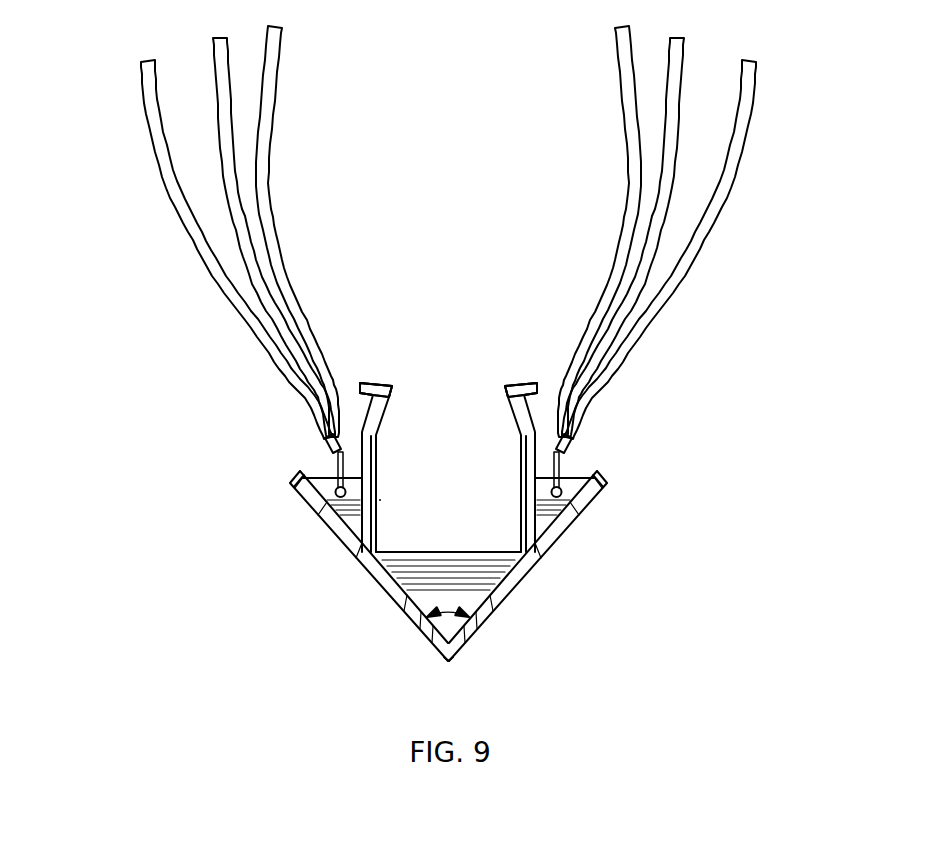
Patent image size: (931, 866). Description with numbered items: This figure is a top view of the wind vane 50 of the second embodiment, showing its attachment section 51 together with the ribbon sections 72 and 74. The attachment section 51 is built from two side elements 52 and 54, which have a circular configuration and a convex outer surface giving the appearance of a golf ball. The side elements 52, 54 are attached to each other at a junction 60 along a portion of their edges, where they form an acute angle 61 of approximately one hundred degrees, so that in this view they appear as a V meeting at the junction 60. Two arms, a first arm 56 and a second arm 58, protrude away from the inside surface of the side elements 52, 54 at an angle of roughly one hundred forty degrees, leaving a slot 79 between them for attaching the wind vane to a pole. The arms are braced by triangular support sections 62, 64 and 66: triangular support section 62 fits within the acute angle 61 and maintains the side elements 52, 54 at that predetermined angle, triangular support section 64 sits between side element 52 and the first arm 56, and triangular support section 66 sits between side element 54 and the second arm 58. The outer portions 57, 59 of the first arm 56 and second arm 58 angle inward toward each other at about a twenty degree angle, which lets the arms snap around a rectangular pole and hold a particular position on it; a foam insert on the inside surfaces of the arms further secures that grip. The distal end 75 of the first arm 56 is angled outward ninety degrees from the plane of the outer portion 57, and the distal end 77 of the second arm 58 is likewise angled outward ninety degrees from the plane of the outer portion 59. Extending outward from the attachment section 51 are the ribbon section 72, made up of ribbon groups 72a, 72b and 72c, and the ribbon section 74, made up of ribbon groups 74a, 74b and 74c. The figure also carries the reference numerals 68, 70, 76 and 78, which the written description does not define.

The wind vane 50 is at (205, 632).
The attachment section 51 is at (330, 554).
The side element 52 is at (363, 583).
The side element 54 is at (497, 619).
The first arm 56 is at (377, 504).
The outer portion of first arm 57 is at (378, 432).
The second arm 58 is at (520, 504).
The outer portion of second arm 59 is at (520, 432).
The junction 60 is at (448, 661).
The acute angle 61 is at (428, 642).
The triangular support section 62 is at (497, 563).
The triangular support section 64 is at (353, 498).
The triangular support section 66 is at (574, 489).
The first pin 68 is at (322, 452).
The second pin 70 is at (560, 475).
The ribbon section 72 is at (300, 238).
The ribbon group 72a is at (270, 70).
The ribbon group 72b is at (218, 105).
The ribbon group 72c is at (158, 137).
The ribbon section 74 is at (555, 206).
The ribbon group 74a is at (738, 138).
The ribbon group 74b is at (677, 107).
The ribbon group 74c is at (630, 70).
The distal end of first arm 75 is at (377, 382).
The first connector 76 is at (324, 440).
The distal end of second arm 77 is at (521, 383).
The second connector 78 is at (570, 444).
The slot 79 is at (432, 428).